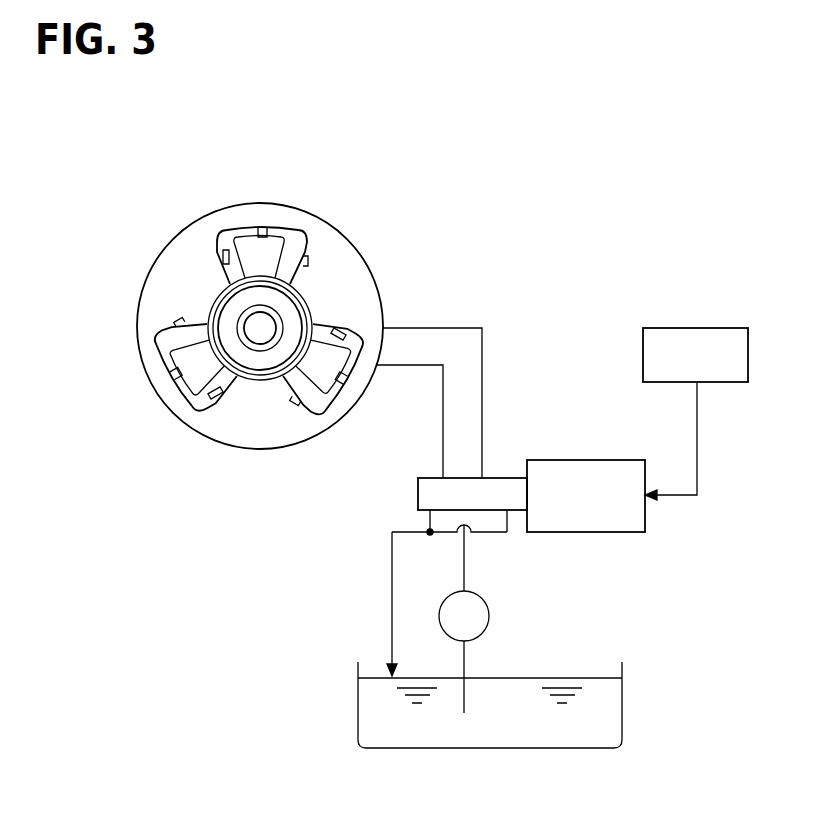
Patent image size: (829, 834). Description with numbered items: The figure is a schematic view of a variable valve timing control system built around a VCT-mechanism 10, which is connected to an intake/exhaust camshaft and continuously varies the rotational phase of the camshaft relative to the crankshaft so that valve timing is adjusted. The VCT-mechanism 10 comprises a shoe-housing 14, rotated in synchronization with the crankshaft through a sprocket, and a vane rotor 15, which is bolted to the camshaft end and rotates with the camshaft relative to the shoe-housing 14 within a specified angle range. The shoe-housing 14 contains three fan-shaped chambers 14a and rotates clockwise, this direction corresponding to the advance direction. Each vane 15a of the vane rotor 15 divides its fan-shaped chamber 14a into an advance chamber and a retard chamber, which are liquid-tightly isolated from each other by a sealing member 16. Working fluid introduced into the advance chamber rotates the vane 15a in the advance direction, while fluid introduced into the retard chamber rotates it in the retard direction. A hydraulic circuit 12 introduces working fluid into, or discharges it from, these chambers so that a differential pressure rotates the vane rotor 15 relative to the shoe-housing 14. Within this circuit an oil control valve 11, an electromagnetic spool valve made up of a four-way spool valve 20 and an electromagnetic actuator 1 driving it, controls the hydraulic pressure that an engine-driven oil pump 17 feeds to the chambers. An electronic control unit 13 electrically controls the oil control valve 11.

The VCT-mechanism 10 is at (157, 227).
The shoe-housing 14 is at (332, 233).
The fan-shaped chamber 14a is at (223, 256).
The vane rotor 15 is at (310, 303).
The vane 15a is at (300, 245).
The sealing member 16 is at (258, 229).
The oil control valve 11 is at (518, 408).
The spool valve 20 is at (503, 488).
The electromagnetic actuator 1 is at (587, 474).
The electronic control unit 13 is at (685, 328).
The hydraulic circuit 12 is at (373, 568).
The oil pump 17 is at (487, 627).